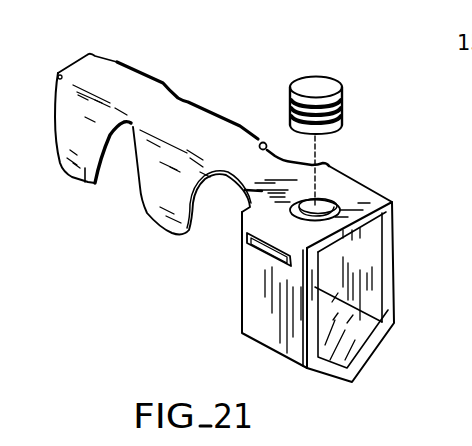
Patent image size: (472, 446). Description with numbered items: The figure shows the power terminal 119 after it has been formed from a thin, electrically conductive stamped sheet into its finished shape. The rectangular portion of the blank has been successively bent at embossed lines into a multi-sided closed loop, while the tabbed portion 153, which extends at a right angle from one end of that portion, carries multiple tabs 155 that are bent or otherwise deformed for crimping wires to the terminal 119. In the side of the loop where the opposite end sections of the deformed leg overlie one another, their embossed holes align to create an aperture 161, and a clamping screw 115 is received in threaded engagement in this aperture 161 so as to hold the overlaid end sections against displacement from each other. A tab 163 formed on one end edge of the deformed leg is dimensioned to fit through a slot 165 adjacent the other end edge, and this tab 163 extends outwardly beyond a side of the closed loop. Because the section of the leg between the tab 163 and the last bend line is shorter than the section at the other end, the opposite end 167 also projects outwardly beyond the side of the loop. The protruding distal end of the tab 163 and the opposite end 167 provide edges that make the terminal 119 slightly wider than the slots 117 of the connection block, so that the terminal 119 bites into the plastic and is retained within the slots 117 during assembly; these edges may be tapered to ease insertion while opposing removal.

The clamping screw 115 is at (343, 103).
The slots 117 is at (363, 278).
The terminal 119 is at (457, 261).
The tabbed portion 153 is at (136, 84).
The tabs 155 is at (156, 198).
The aperture 161 is at (333, 198).
The tab 163 is at (280, 262).
The slot 165 is at (262, 250).
The opposite end 167 is at (393, 204).